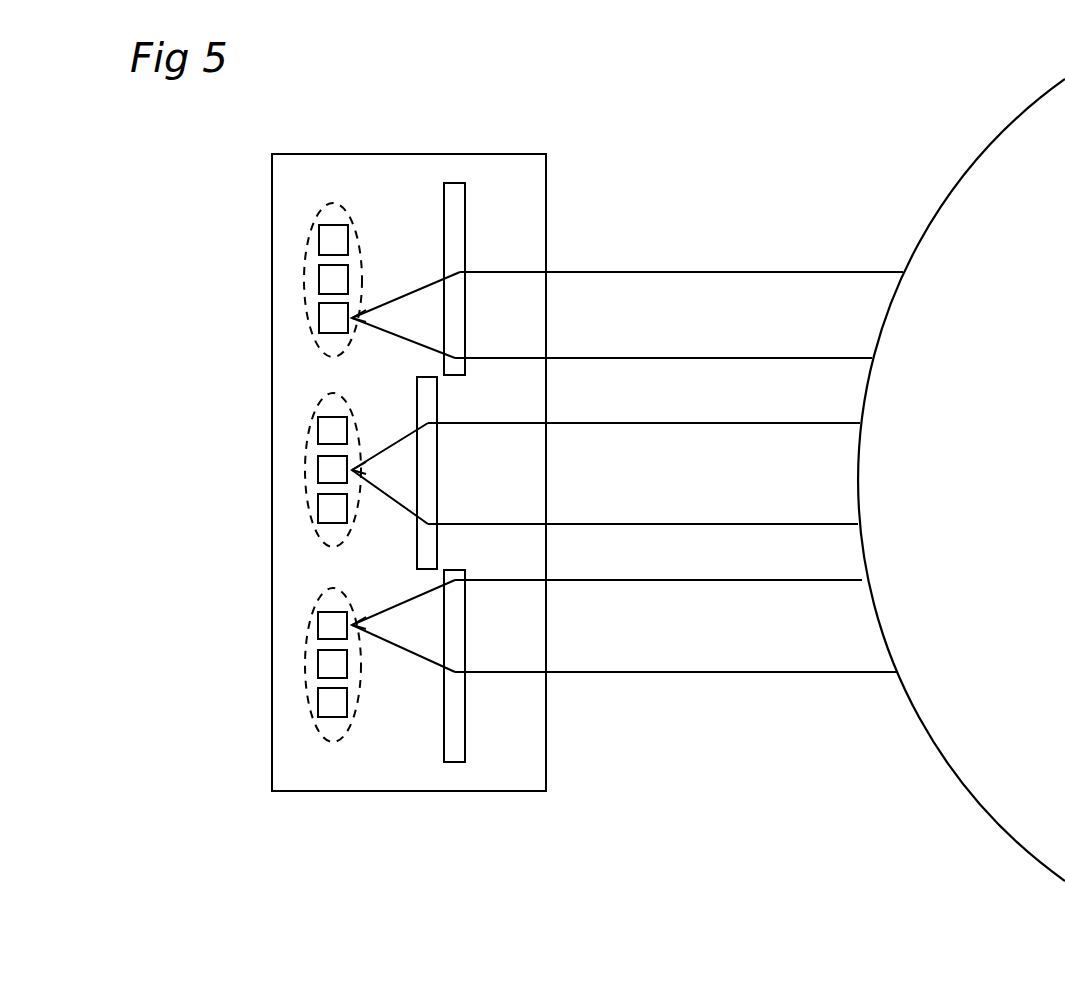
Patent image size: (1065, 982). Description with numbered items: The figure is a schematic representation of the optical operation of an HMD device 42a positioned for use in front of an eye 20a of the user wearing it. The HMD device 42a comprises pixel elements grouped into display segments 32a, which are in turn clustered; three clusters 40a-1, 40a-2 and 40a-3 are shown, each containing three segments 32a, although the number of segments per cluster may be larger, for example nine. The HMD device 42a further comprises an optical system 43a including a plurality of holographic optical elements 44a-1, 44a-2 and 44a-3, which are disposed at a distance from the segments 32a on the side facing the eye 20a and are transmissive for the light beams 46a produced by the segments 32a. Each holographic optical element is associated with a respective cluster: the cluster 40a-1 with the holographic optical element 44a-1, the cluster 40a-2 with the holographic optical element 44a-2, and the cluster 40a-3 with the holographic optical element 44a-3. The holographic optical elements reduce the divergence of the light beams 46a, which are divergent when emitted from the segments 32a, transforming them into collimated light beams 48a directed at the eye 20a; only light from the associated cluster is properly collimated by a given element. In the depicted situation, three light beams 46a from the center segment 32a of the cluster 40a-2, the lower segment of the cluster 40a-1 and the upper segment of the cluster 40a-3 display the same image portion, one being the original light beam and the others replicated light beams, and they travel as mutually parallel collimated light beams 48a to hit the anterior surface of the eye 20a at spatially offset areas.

The eye 20a is at (968, 160).
The display segments 32a is at (330, 232).
The cluster 40a-1 is at (312, 330).
The cluster 40a-2 is at (310, 528).
The cluster 40a-3 is at (312, 718).
The HMD device 42a is at (272, 181).
The optical system 43a is at (480, 178).
The holographic optical element 44a-1 is at (460, 226).
The holographic optical element 44a-2 is at (430, 404).
The holographic optical element 44a-3 is at (469, 756).
The light beams 46a is at (400, 292).
The collimated light beams 48a is at (784, 366).